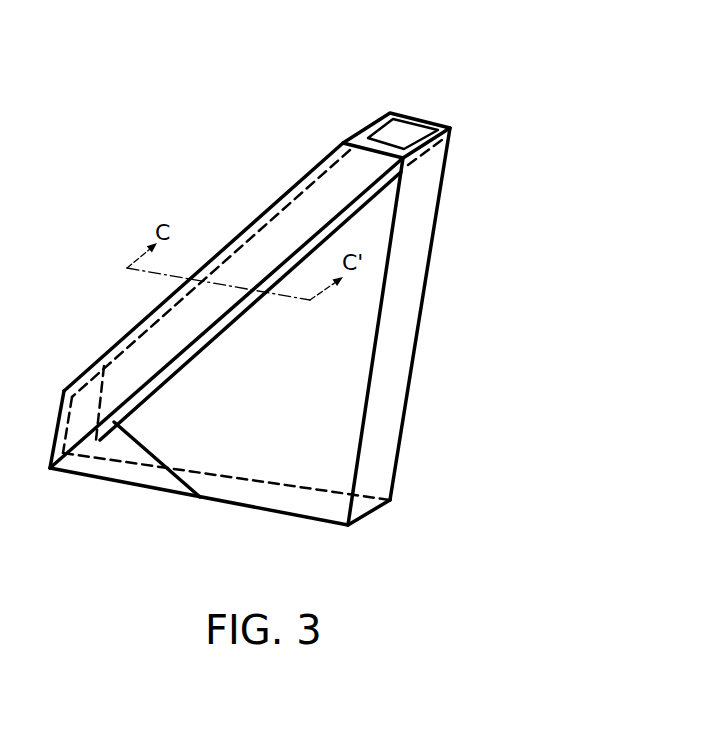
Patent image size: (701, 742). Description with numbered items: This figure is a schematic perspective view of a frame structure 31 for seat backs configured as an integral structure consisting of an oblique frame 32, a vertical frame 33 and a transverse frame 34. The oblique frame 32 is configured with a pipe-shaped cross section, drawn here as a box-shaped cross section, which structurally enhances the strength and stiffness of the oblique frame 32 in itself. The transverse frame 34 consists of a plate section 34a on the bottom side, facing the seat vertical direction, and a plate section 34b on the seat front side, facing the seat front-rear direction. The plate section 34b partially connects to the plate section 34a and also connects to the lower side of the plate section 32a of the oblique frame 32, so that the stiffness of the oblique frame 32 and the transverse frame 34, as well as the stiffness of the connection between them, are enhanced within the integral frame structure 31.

The frame structure 31 is at (286, 146).
The oblique frame 32 is at (270, 233).
The plate section 32a is at (157, 343).
The vertical frame 33 is at (420, 290).
The transverse frame 34 is at (259, 498).
The plate section 34a is at (237, 483).
The plate section 34b is at (123, 471).